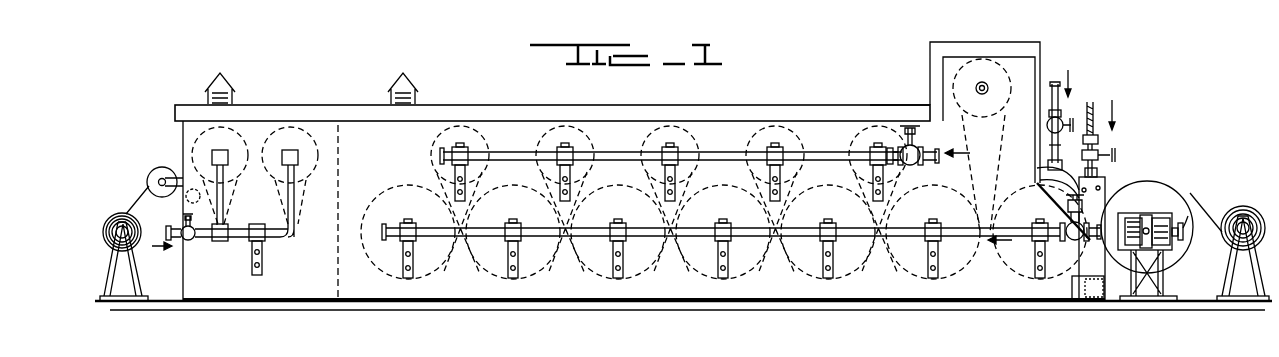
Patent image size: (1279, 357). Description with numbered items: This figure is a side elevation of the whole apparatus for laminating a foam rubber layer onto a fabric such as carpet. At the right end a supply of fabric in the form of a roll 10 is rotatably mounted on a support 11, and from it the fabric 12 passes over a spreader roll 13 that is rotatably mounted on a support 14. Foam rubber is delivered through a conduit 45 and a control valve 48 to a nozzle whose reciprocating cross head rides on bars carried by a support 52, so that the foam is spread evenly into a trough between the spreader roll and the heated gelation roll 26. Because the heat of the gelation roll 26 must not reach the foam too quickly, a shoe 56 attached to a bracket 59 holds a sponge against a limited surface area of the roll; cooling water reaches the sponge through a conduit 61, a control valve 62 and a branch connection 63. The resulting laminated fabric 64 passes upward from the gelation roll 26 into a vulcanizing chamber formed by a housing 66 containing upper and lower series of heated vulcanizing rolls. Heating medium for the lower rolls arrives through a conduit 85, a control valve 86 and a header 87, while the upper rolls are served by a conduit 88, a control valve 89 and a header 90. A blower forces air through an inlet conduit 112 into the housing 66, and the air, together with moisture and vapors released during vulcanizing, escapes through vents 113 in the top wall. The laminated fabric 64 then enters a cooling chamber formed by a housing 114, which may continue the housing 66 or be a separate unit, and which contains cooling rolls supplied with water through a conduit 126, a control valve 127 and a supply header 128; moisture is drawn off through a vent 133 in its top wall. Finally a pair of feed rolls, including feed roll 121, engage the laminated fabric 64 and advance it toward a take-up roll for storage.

The roll 10 is at (1243, 221).
The support 11 is at (1250, 302).
The fabric 12 is at (1208, 214).
The spreader roll 13 is at (1180, 256).
The support 14 is at (1162, 290).
The gelation roll 26 is at (724, 242).
The conduit 45 is at (1095, 102).
The control valve 48 is at (1108, 154).
The support 52 is at (1106, 186).
The shoe 56 is at (1062, 190).
The bracket 59 is at (1040, 75).
The conduit 61 is at (1060, 86).
The control valve 62 is at (1068, 122).
The branch connection 63 is at (1050, 148).
The laminated fabric 64 is at (340, 160).
The housing 66 is at (878, 104).
The conduit 85 is at (1095, 242).
The control valve 86 is at (1072, 247).
The header 87 is at (900, 238).
The conduit 88 is at (930, 142).
The control valve 89 is at (915, 165).
The header 90 is at (728, 150).
The inlet conduit 112 is at (1096, 302).
The vent 113 is at (420, 95).
The housing 114 is at (266, 110).
The feed roll 121 is at (1185, 220).
The conduit 126 is at (175, 228).
The control valve 127 is at (190, 242).
The supply header 128 is at (272, 238).
The vent 133 is at (227, 82).